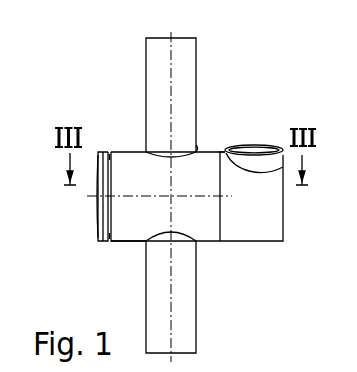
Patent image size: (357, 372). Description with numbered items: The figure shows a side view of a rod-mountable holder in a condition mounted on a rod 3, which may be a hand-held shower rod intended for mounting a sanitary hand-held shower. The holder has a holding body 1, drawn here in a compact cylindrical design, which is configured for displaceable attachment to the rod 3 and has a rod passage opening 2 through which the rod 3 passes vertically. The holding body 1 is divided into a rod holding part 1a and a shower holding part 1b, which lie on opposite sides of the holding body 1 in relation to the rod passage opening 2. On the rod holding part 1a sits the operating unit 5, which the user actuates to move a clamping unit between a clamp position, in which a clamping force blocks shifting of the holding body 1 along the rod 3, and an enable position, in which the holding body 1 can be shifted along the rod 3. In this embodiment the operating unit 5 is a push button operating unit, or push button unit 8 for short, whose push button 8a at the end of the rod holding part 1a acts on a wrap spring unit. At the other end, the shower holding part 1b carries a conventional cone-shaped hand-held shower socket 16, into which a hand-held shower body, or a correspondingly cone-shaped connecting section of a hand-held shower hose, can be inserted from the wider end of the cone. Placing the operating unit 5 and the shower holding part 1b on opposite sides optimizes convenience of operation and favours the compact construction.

The holding body 1 is at (210, 244).
The rod holding part 1a is at (130, 233).
The shower holding part 1b is at (262, 232).
The rod passage opening 2 is at (193, 151).
The rod 3 is at (197, 73).
The operating unit 5 is at (106, 244).
The push button unit 8 is at (108, 155).
The push button 8a is at (97, 221).
The hand-held shower socket 16 is at (241, 148).